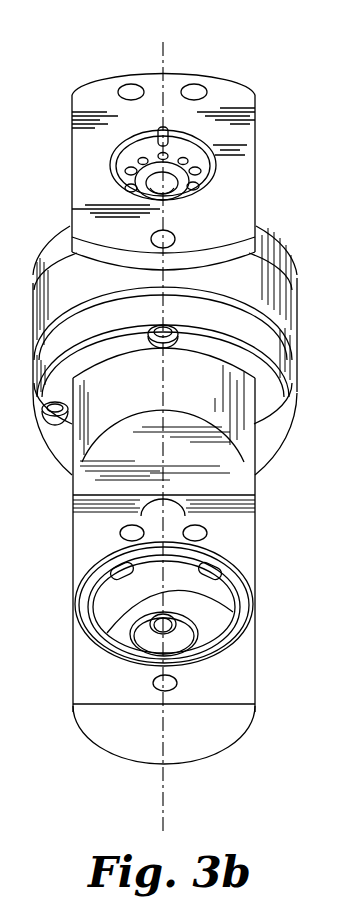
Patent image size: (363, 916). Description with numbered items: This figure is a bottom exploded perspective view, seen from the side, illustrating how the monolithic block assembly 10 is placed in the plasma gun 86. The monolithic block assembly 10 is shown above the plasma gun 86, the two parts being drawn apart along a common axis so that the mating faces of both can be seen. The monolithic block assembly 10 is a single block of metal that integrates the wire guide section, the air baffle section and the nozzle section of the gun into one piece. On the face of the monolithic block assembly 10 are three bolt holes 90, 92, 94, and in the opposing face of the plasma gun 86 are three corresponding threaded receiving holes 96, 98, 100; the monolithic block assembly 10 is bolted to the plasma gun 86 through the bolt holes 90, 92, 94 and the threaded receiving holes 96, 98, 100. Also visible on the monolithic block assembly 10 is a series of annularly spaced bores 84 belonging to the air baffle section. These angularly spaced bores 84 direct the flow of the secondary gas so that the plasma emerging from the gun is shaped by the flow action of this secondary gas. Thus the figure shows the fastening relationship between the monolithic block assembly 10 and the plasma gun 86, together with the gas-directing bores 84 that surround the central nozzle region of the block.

The monolithic block assembly 10 is at (262, 175).
The annularly spaced bores 84 is at (131, 167).
The plasma gun 86 is at (257, 617).
The bolt hole 90 is at (130, 82).
The bolt hole 92 is at (194, 82).
The bolt hole 94 is at (157, 232).
The threaded receiving hole 96 is at (130, 526).
The threaded receiving hole 98 is at (196, 526).
The threaded receiving hole 100 is at (155, 681).